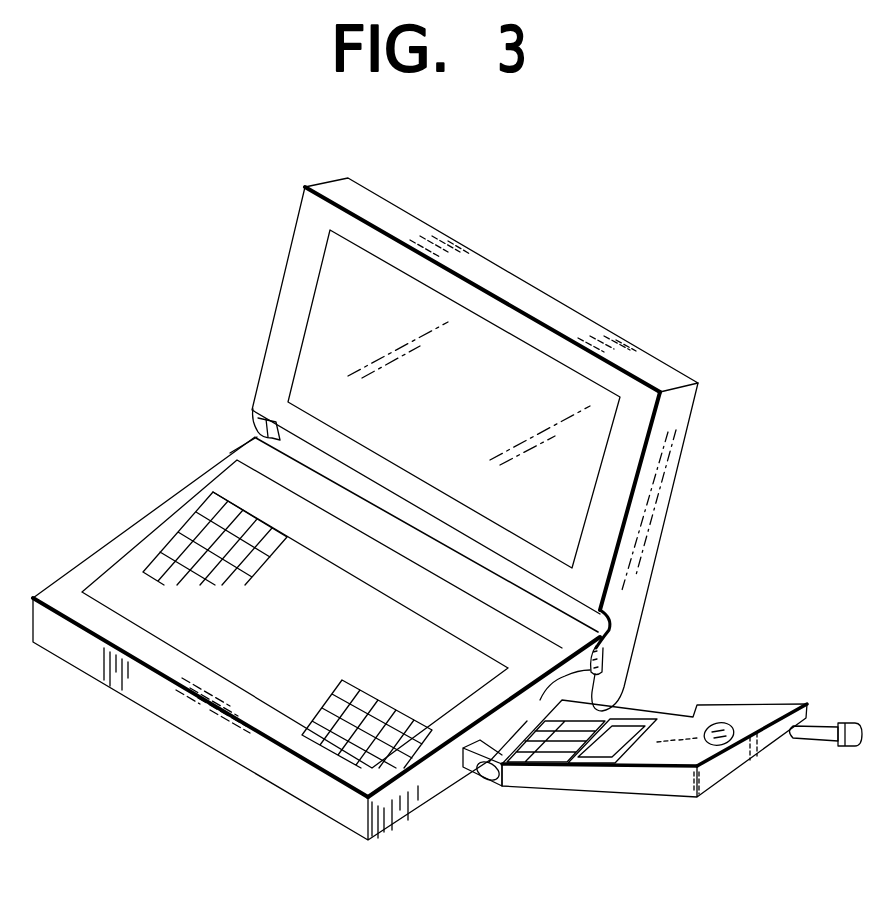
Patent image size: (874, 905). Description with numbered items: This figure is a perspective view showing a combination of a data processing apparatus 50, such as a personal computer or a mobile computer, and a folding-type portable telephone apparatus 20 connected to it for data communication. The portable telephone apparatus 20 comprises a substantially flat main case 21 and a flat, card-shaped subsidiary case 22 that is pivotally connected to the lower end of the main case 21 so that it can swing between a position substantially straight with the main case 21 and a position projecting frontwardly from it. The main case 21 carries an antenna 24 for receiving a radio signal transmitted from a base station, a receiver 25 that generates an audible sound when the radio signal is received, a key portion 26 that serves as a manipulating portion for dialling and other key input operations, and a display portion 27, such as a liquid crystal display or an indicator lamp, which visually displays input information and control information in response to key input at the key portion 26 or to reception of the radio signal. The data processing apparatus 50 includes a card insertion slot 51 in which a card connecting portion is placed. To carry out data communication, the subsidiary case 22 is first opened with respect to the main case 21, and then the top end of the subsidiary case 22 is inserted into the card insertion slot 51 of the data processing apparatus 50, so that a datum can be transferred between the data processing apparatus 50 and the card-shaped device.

The portable telephone apparatus 20 is at (618, 753).
The main case 21 is at (693, 717).
The subsidiary case 22 is at (492, 748).
The antenna 24 is at (816, 727).
The receiver 25 is at (706, 743).
The key portion 26 is at (530, 765).
The display portion 27 is at (590, 765).
The data processing apparatus 50 is at (562, 320).
The card insertion slot 51 is at (602, 657).